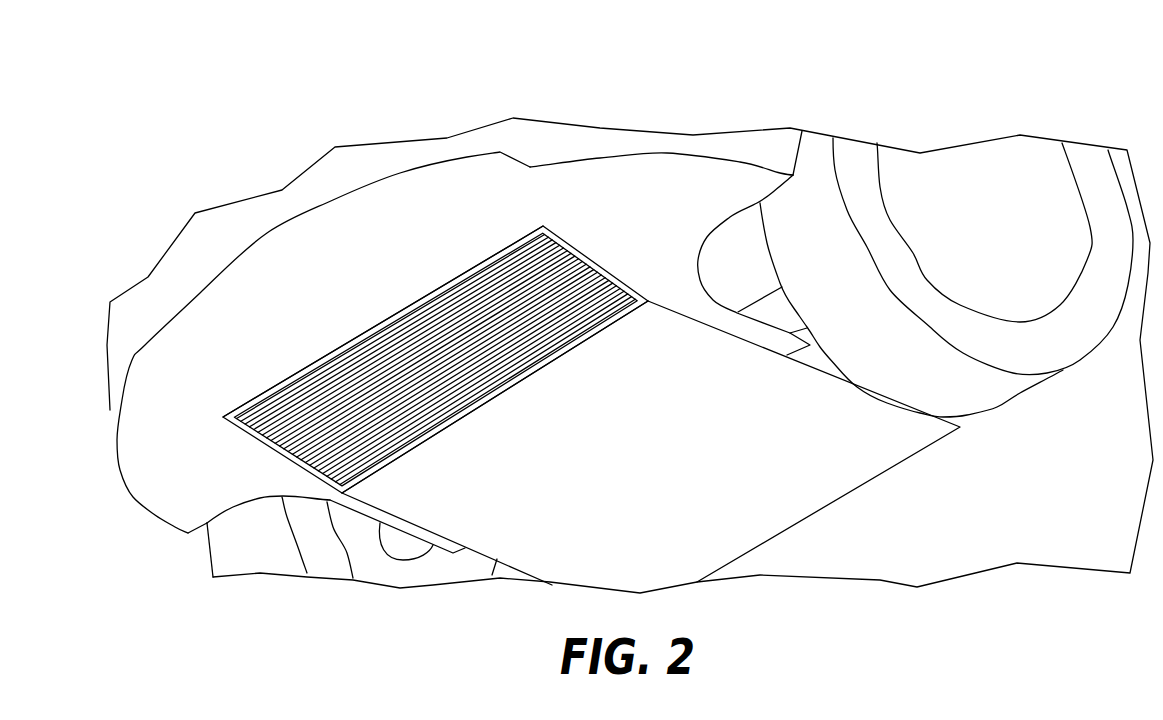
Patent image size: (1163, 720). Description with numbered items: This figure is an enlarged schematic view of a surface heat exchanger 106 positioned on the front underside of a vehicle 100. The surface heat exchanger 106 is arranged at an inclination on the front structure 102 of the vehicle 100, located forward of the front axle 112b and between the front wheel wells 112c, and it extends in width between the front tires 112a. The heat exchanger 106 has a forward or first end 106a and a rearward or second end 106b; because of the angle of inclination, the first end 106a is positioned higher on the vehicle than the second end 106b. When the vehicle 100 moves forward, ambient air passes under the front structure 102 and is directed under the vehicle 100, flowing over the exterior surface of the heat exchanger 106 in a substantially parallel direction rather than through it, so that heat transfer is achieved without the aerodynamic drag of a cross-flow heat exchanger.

The vehicle 100 is at (951, 85).
The front structure of the vehicle 102 is at (255, 220).
The surface heat exchanger 106 is at (560, 270).
The forward or first end 106a is at (377, 322).
The rearward or second end 106b is at (510, 397).
The front tires 112a is at (1013, 395).
The front axle 112b is at (760, 297).
The front wheel wells 112c is at (775, 332).